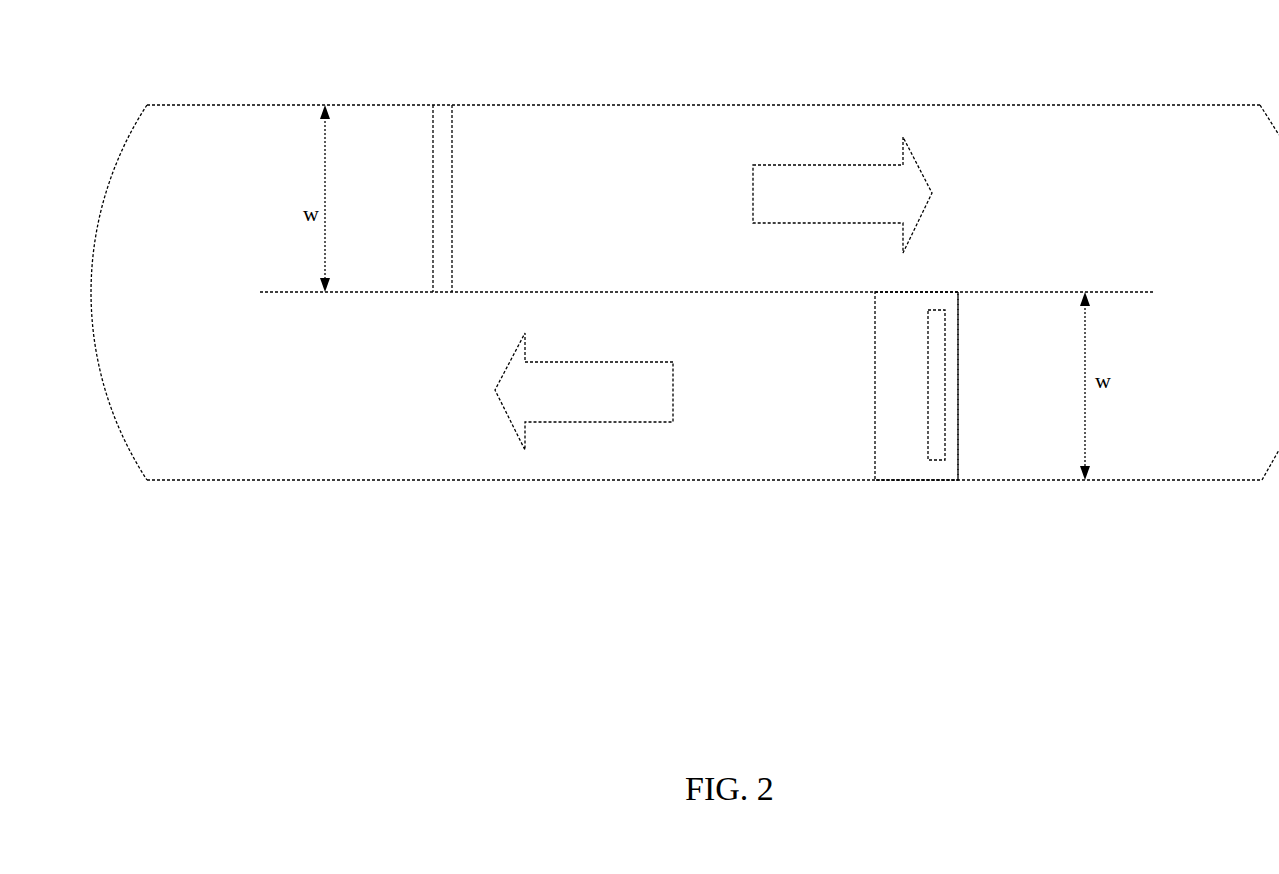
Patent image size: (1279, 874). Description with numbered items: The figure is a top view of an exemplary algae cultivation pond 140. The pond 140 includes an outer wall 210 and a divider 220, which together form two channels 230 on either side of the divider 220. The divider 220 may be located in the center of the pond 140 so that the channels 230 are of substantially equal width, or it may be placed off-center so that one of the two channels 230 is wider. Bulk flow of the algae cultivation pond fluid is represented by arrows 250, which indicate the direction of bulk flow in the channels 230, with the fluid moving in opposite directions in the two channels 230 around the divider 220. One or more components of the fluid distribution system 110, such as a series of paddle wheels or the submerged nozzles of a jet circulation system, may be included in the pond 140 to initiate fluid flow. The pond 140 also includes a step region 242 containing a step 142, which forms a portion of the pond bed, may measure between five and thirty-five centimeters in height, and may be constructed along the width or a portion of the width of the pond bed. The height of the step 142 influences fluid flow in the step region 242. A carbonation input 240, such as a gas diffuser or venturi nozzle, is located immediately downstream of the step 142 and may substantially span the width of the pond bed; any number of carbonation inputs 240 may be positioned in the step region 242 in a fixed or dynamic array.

The fluid distribution system 110 is at (437, 180).
The pond 140 is at (222, 524).
The step 142 is at (960, 400).
The outer wall 210 is at (643, 105).
The divider 220 is at (617, 292).
The channels 230 is at (717, 295).
The carbonation input 240 is at (938, 407).
The step region 242 is at (916, 386).
The arrows 250 is at (830, 197).